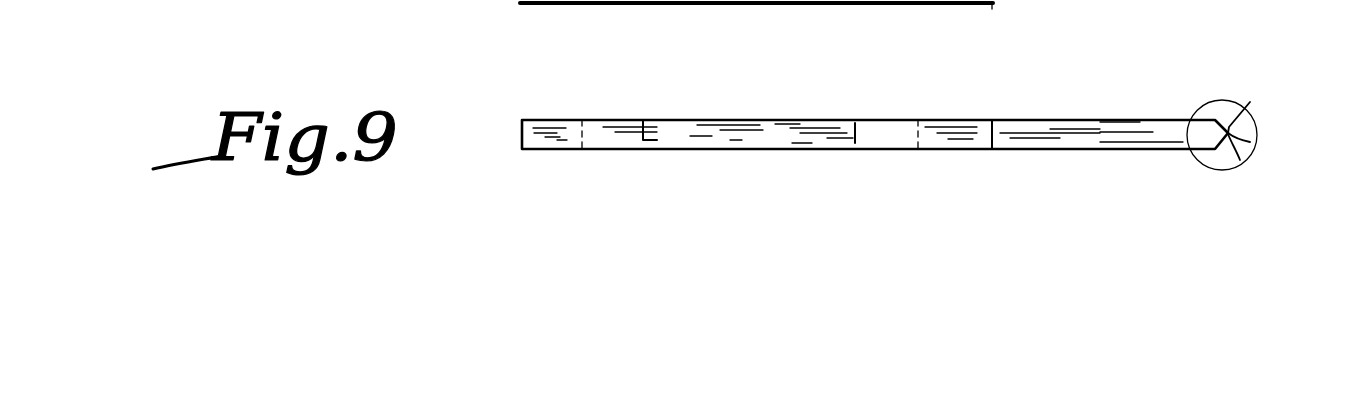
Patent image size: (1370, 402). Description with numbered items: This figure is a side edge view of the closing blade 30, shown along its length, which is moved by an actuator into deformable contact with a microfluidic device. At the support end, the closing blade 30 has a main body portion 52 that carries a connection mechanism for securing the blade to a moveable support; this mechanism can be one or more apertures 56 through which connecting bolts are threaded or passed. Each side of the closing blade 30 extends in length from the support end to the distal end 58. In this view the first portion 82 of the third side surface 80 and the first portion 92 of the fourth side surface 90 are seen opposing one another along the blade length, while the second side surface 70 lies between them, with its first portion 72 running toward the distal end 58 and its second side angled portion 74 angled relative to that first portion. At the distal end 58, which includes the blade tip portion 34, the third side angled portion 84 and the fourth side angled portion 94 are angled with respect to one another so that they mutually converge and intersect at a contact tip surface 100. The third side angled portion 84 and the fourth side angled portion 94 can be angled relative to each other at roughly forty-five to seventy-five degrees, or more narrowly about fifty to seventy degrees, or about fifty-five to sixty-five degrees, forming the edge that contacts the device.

The closing blade 30 is at (647, 104).
The blade tip portion 34 is at (1217, 121).
The main body portion 52 is at (549, 119).
The apertures 56 is at (585, 128).
The distal end 58 is at (1145, 76).
The second side surface 70 is at (667, 140).
The first portion of second side surface 72 is at (705, 142).
The second side angled portion 74 is at (1089, 148).
The third side surface 80 is at (760, 119).
The first portion of third side surface 82 is at (950, 120).
The third side angled portion 84 is at (1250, 102).
The fourth side surface 90 is at (800, 149).
The first portion of fourth side surface 92 is at (947, 152).
The fourth side angled portion 94 is at (1240, 160).
The contact tip surface 100 is at (1250, 142).